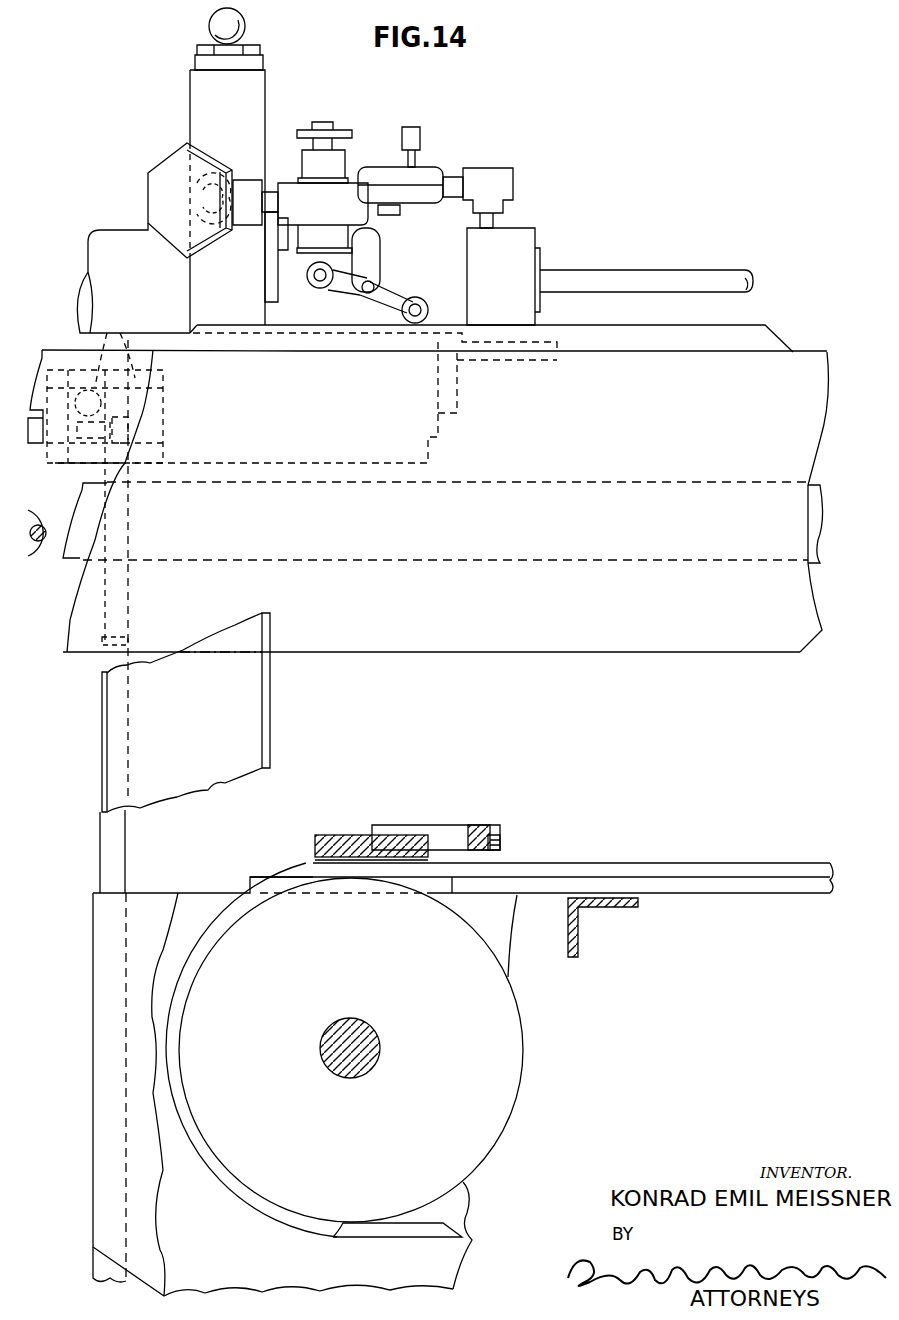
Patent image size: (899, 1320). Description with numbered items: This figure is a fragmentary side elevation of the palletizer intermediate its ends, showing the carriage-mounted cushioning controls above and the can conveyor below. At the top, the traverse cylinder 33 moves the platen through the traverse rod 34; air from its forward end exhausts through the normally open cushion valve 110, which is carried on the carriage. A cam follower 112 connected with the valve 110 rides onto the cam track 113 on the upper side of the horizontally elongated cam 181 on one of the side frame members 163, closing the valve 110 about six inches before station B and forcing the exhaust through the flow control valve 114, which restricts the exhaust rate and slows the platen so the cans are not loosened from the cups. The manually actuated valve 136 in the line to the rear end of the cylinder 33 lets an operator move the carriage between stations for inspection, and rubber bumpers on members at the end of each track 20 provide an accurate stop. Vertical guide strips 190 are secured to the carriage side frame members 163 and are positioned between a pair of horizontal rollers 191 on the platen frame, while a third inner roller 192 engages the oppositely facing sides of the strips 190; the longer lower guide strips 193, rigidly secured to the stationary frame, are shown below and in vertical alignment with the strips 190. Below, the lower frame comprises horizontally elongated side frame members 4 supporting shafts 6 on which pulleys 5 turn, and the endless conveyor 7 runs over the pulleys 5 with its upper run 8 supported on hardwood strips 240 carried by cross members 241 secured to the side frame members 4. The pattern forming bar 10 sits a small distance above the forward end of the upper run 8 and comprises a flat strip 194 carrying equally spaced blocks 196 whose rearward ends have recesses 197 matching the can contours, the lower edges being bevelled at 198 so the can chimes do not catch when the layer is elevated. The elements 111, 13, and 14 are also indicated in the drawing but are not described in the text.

The manually actuated valve 136 is at (268, 53).
The hexagonal nut 111 is at (247, 218).
The traverse cylinder 33 is at (148, 283).
The horizontal rollers 191 is at (119, 333).
The cushion valve 110 is at (358, 165).
The flow control valve 114 is at (432, 172).
The cam follower 112 is at (430, 297).
The cam track 113 is at (581, 310).
The traverse rod 34 is at (683, 276).
The cam 181 is at (610, 331).
The table 14 is at (801, 390).
The track 20 is at (818, 497).
The side frame members 163 is at (70, 464).
The inner roller 192 is at (130, 463).
The vertical guide strips 190 is at (128, 603).
The plate 13 is at (262, 709).
The lower guide strips 193 is at (128, 760).
The side frame members 4 is at (130, 1046).
The pulleys 5 is at (523, 1048).
The shafts 6 is at (378, 1052).
The pattern forming bar 10 is at (423, 815).
The flat strip 194 is at (325, 837).
The blocks 196 is at (438, 827).
The bevel 198 is at (500, 835).
The recess 197 is at (498, 843).
The upper run 8 is at (682, 870).
The hardwood strips 240 is at (747, 896).
The endless conveyor 7 is at (765, 862).
The cross members 241 is at (580, 928).